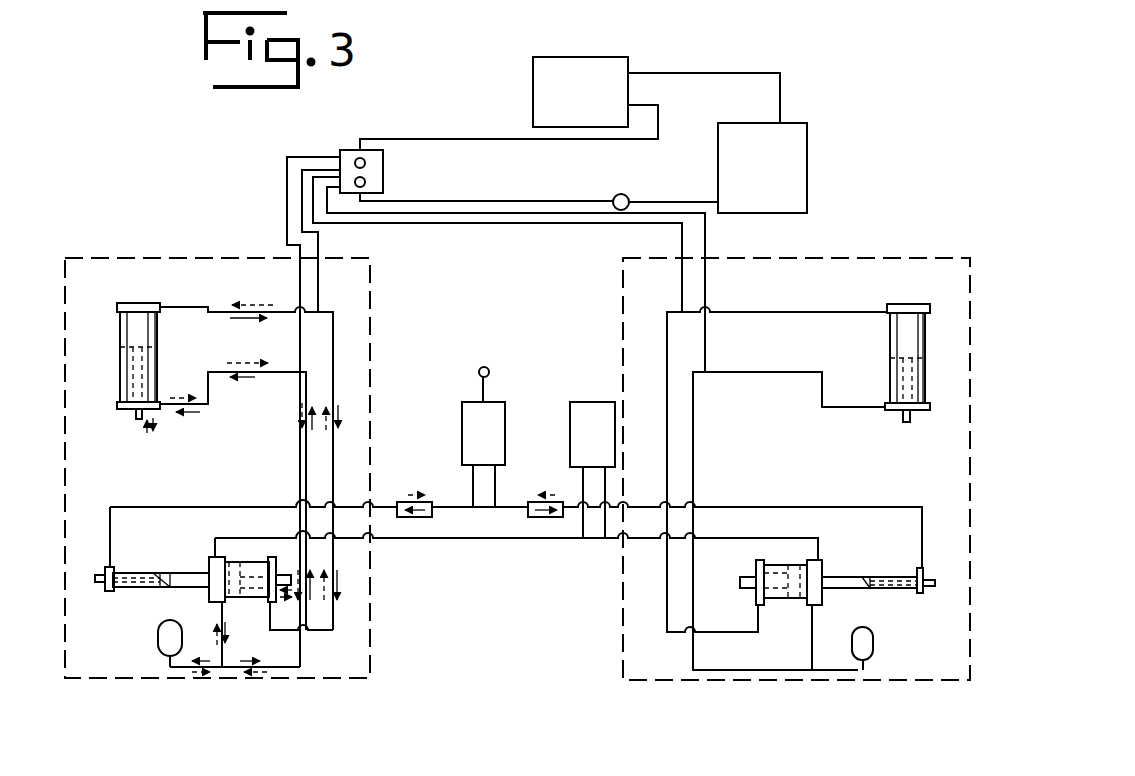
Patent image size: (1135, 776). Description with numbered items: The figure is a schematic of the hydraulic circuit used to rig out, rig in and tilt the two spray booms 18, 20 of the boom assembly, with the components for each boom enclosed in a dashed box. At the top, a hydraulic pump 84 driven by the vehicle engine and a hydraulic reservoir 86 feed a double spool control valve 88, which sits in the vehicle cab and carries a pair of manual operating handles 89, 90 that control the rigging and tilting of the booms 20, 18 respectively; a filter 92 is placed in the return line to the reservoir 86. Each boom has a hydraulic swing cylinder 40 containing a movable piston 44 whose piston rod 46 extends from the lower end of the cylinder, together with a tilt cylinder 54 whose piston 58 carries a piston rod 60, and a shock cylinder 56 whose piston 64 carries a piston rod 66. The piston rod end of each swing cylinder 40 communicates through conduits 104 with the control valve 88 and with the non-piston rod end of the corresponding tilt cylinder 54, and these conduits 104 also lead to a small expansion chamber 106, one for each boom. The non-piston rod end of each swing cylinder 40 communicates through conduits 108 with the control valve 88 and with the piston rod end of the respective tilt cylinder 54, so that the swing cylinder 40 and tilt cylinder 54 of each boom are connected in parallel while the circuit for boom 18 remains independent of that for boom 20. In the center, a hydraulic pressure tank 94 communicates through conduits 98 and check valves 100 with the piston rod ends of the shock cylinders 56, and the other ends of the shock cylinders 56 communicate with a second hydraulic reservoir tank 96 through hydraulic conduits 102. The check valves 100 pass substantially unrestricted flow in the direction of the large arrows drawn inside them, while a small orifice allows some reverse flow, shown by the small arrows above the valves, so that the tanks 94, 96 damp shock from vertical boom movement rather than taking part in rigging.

The spray boom 18 is at (623, 303).
The spray boom 20 is at (371, 327).
The hydraulic swing cylinder 40 is at (120, 338).
The piston 44 is at (133, 350).
The piston rod 46 is at (135, 416).
The tilt cylinder 54 is at (233, 562).
The shock cylinder 56 is at (140, 573).
The piston 58 is at (232, 600).
The piston rod 60 is at (281, 575).
The piston 64 is at (170, 573).
The piston rod 66 is at (107, 565).
The hydraulic pump 84 is at (570, 107).
The hydraulic reservoir 86 is at (762, 168).
The double spool control valve 88 is at (344, 150).
The manual operating handle 89 is at (366, 163).
The manual operating handle 90 is at (366, 182).
The filter 92 is at (626, 196).
The hydraulic pressure tank 94 is at (478, 418).
The second hydraulic reservoir tank 96 is at (597, 407).
The conduits 98 is at (494, 479).
The check valves 100 is at (528, 512).
The hydraulic conduits 102 is at (607, 540).
The conduits 104 is at (297, 263).
The expansion chamber 106 is at (158, 641).
The conduits 108 is at (208, 311).